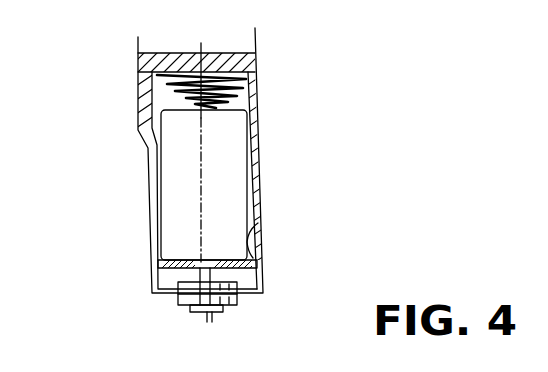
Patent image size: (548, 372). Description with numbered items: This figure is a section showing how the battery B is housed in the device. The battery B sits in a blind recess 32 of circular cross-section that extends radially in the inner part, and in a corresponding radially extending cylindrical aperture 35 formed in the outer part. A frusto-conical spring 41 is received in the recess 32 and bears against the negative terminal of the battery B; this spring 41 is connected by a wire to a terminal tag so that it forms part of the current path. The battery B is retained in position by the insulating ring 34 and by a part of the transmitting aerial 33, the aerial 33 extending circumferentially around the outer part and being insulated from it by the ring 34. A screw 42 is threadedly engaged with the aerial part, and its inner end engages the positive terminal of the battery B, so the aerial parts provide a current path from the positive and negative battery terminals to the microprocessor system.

The frusto-conical spring 41 is at (240, 28).
The blind recess 32 is at (244, 87).
The battery B is at (234, 155).
The cylindrical aperture 35 is at (258, 223).
The insulating ring 34 is at (237, 293).
The transmitting aerial 33 is at (185, 308).
The screw 42 is at (216, 313).